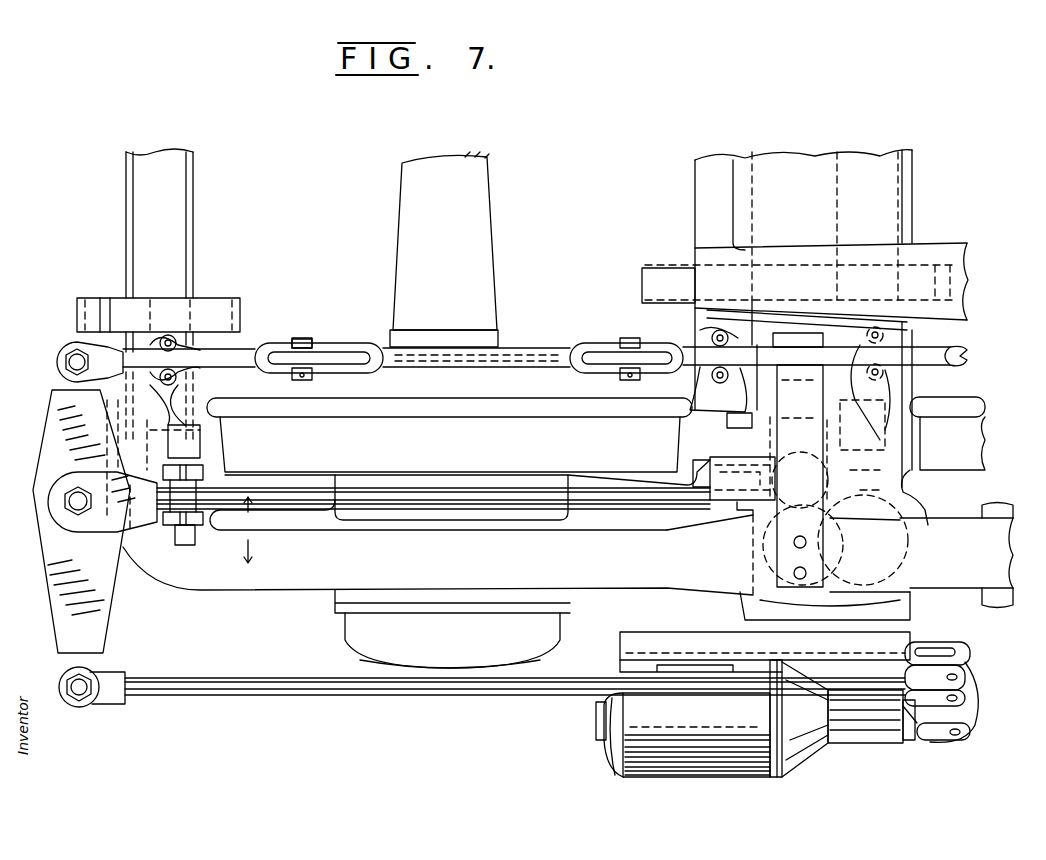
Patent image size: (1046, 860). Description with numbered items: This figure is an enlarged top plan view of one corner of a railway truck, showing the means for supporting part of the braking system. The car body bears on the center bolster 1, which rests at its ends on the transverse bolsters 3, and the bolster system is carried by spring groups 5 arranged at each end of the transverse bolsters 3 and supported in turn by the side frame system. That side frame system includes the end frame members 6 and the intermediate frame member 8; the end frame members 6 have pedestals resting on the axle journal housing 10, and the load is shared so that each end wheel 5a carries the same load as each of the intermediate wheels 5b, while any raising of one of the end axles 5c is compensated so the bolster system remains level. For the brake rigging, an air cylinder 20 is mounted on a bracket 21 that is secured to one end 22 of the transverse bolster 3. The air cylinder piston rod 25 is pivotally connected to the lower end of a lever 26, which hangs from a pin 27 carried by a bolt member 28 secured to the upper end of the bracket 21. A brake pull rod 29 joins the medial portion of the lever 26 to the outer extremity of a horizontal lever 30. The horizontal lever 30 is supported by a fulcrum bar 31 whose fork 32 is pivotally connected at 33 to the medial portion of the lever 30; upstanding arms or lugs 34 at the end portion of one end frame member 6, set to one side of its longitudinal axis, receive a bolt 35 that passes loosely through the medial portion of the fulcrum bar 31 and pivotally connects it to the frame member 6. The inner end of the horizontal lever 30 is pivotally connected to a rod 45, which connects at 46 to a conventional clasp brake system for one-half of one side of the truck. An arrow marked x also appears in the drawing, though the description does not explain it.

The center bolster 1 is at (952, 250).
The transverse bolsters 3 is at (888, 478).
The spring groups 5 is at (926, 503).
The end wheel 5a is at (508, 402).
The intermediate wheels 5b is at (975, 398).
The end axles 5c is at (470, 240).
The end frame members 6 is at (305, 590).
The intermediate frame member 8 is at (998, 515).
The axle journal housing 10 is at (545, 632).
The air cylinder 20 is at (640, 750).
The bracket 21 is at (670, 650).
The end of transverse bolster 22 is at (918, 615).
The air cylinder piston rod 25 is at (875, 738).
The lever 26 is at (965, 714).
The pin 27 is at (965, 672).
The bolt member 28 is at (942, 651).
The brake pull rod 29 is at (382, 697).
The horizontal lever 30 is at (100, 613).
The fulcrum bar 31 is at (307, 496).
The fork 32 is at (60, 480).
The pivotal connection 33 is at (68, 500).
The upstanding arms or lugs 34 is at (182, 520).
The bolt 35 is at (185, 443).
The rod 45 is at (240, 356).
The pivotal connection 46 is at (305, 343).
The direction of adjustment x is at (247, 530).